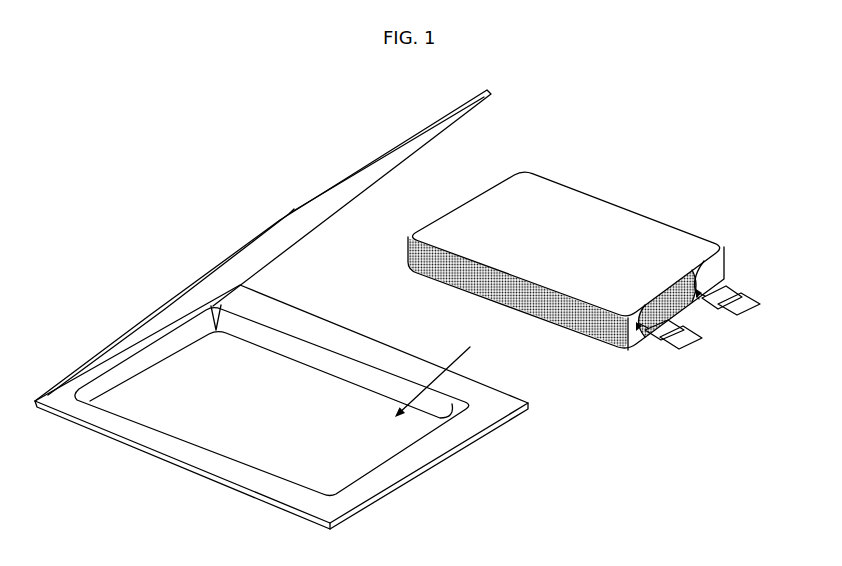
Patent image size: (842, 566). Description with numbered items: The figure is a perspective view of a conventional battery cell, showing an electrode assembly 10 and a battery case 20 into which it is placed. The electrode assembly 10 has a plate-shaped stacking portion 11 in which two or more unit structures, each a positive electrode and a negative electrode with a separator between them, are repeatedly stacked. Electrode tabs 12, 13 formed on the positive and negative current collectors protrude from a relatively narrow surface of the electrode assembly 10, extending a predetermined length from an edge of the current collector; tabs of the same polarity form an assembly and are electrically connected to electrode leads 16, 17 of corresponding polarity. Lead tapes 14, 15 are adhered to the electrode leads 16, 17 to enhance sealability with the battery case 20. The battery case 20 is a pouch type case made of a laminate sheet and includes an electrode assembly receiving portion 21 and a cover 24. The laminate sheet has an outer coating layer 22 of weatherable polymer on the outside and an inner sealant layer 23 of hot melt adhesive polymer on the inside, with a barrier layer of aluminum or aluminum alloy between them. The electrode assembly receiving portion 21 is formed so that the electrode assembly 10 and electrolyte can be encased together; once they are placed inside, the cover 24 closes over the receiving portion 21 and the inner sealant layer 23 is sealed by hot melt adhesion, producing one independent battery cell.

The electrode assembly 10 is at (610, 161).
The stacking portion 11 is at (640, 226).
The electrode tab 12 is at (705, 271).
The electrode tab 13 is at (643, 340).
The lead tape 14 is at (747, 289).
The lead tape 15 is at (668, 347).
The electrode lead 16 is at (752, 313).
The electrode lead 17 is at (692, 347).
The battery case 20 is at (156, 257).
The electrode assembly receiving portion 21 is at (368, 458).
The outer coating layer 22 is at (260, 502).
The inner sealant layer 23 is at (160, 445).
The cover 24 is at (325, 188).